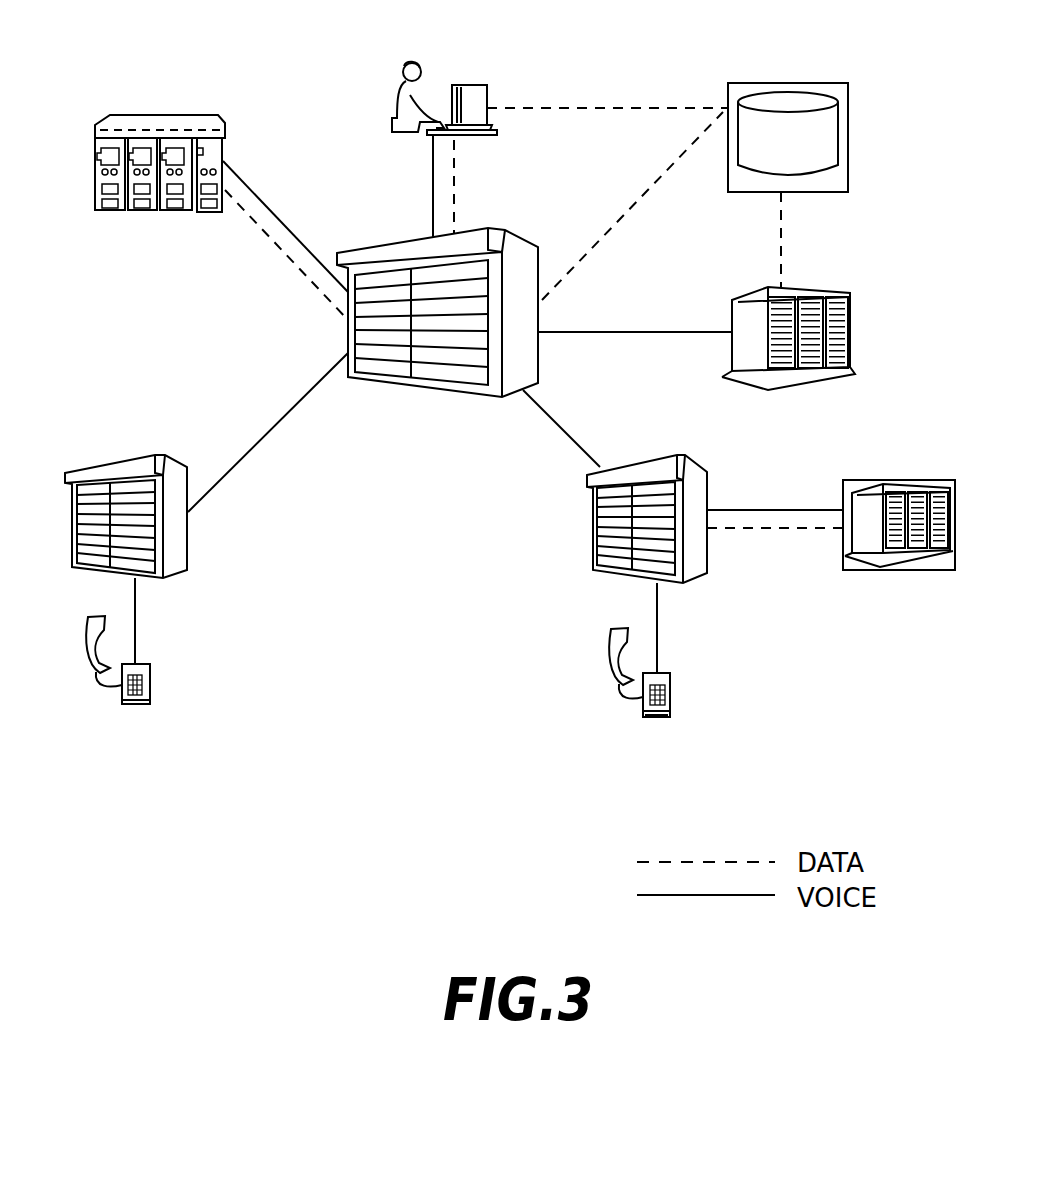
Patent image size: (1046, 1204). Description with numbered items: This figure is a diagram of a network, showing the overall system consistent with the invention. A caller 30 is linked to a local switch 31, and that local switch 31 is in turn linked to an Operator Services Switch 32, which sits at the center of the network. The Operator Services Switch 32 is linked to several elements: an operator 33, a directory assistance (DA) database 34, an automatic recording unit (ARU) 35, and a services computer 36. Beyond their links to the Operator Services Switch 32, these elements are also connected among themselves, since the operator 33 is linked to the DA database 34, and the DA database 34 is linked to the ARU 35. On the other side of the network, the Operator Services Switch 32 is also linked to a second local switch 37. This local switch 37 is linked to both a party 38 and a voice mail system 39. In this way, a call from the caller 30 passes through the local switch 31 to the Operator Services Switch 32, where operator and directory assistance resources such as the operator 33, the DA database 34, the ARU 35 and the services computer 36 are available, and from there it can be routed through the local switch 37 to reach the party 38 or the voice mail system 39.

The caller 30 is at (152, 683).
The local switch 31 is at (190, 530).
The Operator Services Switch 32 is at (438, 400).
The operator 33 is at (465, 85).
The directory assistance (DA) database 34 is at (792, 83).
The automatic recording unit (ARU) 35 is at (850, 312).
The services computer 36 is at (160, 112).
The local switch 37 is at (588, 548).
The party 38 is at (658, 720).
The voice mail system 39 is at (930, 480).